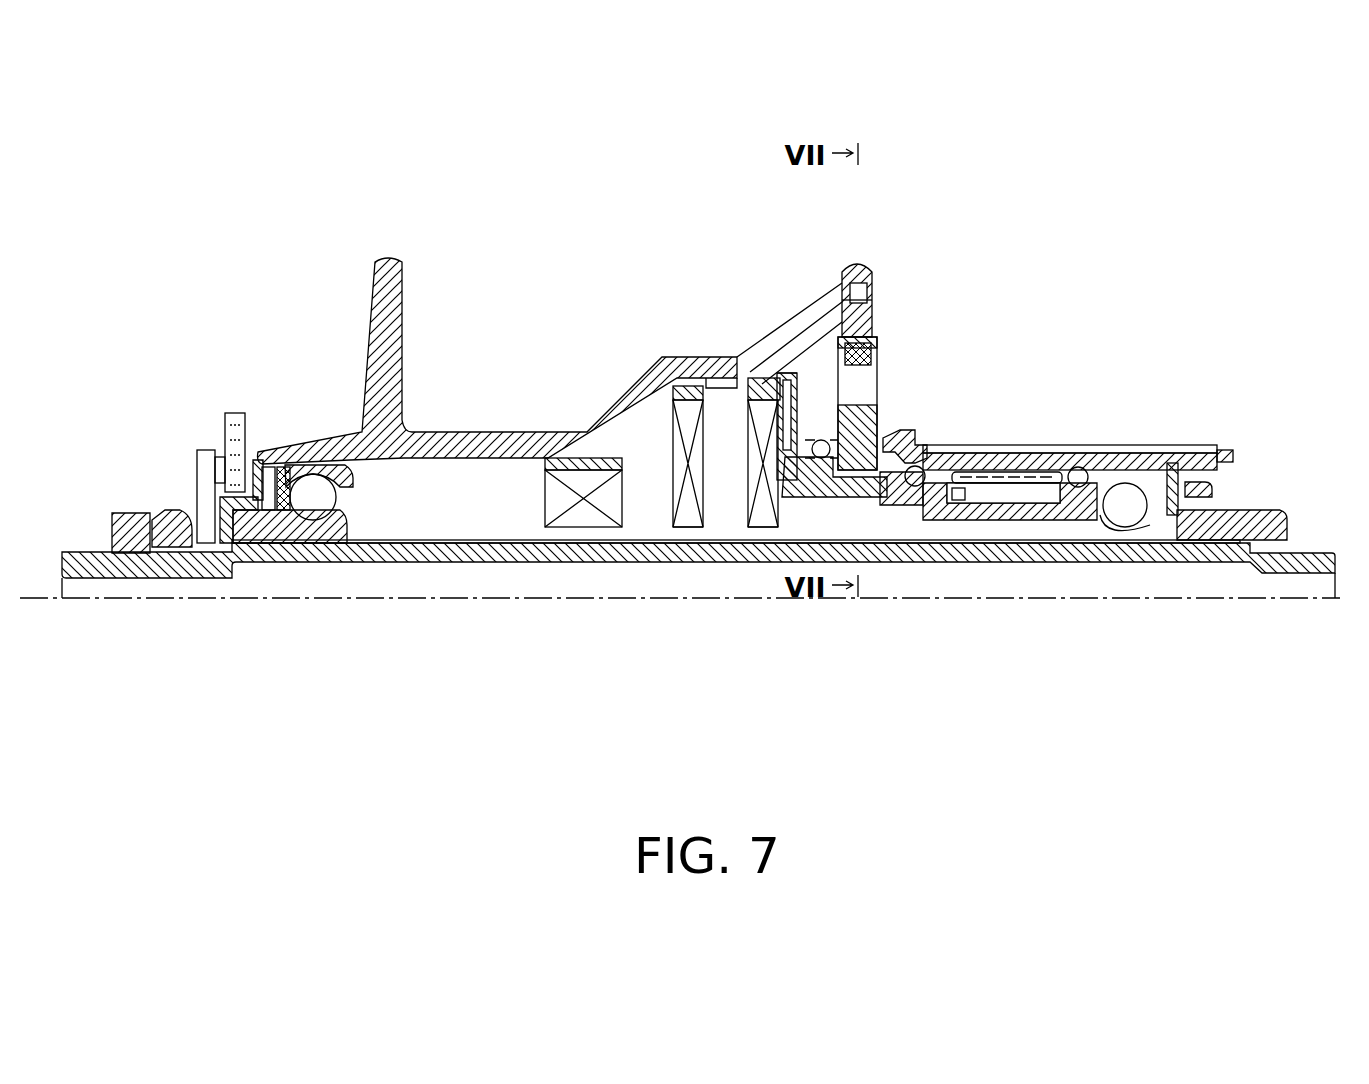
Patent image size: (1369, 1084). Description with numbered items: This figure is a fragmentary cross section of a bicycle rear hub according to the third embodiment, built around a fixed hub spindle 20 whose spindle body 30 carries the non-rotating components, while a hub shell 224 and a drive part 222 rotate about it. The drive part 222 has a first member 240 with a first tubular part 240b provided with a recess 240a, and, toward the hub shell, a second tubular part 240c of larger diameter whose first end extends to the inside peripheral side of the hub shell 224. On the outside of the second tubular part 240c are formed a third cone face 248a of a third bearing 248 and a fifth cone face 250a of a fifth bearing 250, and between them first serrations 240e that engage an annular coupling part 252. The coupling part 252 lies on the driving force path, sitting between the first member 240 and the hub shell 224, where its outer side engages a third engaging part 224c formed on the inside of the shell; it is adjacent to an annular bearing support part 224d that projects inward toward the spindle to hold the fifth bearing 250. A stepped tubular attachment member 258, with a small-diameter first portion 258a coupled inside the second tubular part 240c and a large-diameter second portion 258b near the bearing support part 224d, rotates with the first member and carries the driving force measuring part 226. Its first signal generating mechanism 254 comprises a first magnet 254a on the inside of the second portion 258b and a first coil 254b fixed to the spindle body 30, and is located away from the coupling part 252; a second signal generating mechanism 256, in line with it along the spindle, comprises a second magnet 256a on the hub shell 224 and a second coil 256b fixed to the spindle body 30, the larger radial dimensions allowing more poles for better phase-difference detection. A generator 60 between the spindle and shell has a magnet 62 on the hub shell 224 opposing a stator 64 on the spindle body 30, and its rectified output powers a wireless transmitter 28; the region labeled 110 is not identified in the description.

The hub spindle 20 is at (471, 505).
The wireless transmitter 28 is at (238, 413).
The spindle body 30 is at (430, 531).
The generator 60 is at (532, 479).
The magnet 62 is at (573, 442).
The stator 64 is at (578, 526).
The motor unit 110 is at (555, 325).
The drive part 222 is at (1070, 430).
The hub shell 224 is at (546, 417).
The third engaging part 224c is at (897, 359).
The bearing support part 224d is at (835, 345).
The driving force measuring part 226 is at (734, 372).
The first member 240 is at (1042, 527).
The recess 240a is at (1020, 478).
The first tubular part 240b is at (980, 528).
The second tubular part 240c is at (863, 495).
The first serrations 240e is at (890, 440).
The third bearing 248 is at (890, 441).
The third cone face 248a is at (917, 488).
The fifth bearing 250 is at (877, 400).
The fifth cone face 250a is at (822, 432).
The coupling part 252 is at (902, 362).
The first signal generating mechanism 254 is at (737, 524).
The first magnet 254a is at (767, 375).
The first coil 254b is at (763, 524).
The second signal generating mechanism 256 is at (653, 524).
The second magnet 256a is at (673, 395).
The second coil 256b is at (668, 522).
The attachment member 258 is at (787, 372).
The first portion 258a is at (808, 495).
The second portion 258b is at (780, 380).